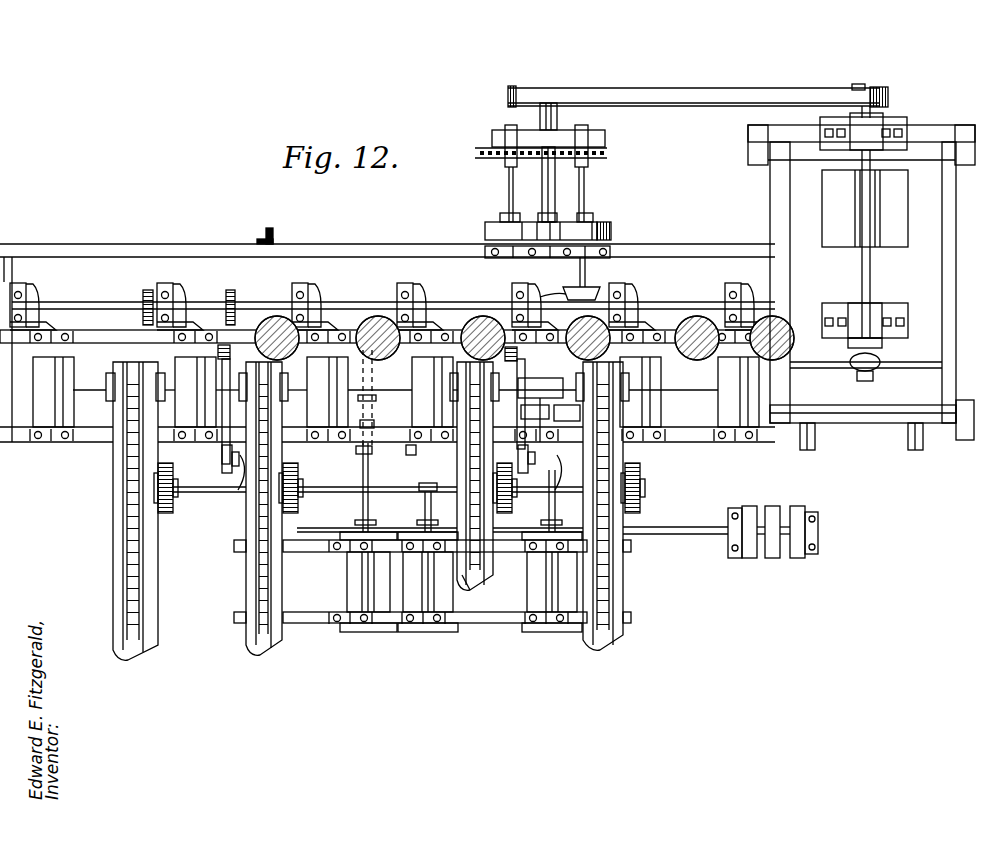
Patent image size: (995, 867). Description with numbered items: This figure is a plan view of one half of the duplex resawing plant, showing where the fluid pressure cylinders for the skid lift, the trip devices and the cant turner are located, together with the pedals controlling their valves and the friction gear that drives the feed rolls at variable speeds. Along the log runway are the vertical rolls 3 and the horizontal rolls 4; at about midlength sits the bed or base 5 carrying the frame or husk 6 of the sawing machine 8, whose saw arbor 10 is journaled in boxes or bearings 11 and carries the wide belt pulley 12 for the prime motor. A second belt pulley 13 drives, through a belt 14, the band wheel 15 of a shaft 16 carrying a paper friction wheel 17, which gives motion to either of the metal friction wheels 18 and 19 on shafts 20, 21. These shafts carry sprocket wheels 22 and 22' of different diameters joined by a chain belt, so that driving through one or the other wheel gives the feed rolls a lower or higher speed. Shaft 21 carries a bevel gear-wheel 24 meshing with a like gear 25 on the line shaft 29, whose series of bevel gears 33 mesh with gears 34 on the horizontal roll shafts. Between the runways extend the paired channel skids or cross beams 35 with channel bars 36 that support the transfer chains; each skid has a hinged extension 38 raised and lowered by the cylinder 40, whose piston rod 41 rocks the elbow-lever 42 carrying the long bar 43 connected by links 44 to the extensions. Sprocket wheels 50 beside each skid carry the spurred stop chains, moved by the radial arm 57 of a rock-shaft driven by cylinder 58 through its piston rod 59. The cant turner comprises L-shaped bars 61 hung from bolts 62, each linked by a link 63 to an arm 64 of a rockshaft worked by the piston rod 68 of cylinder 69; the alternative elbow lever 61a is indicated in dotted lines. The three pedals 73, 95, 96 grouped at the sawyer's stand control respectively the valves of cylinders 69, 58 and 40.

The vertical rolls 3 is at (272, 318).
The horizontal rolls 4 is at (60, 397).
The bed or base 5 is at (875, 212).
The frame or husk 6 is at (957, 270).
The sawing machine 8 is at (851, 362).
The saw arbor 10 is at (858, 264).
The boxes or bearings 11 is at (835, 138).
The wide belt pulley 12 is at (830, 240).
The belt pulley 13 is at (889, 98).
The belt 14 is at (678, 100).
The band wheel 15 is at (508, 104).
The shaft 16 is at (543, 187).
The friction wheel 17 is at (560, 222).
The metal friction wheel 18 is at (487, 228).
The metal friction wheel 19 is at (612, 230).
The shaft 20 is at (505, 172).
The shaft 21 is at (587, 168).
The sprocket wheel 22 is at (531, 140).
The sprocket wheel 22' is at (561, 153).
The bevel gear-wheel 24 is at (600, 292).
The bevel gear 25 is at (562, 298).
The line shaft 29 is at (106, 301).
The bevel gear 33 is at (34, 300).
The bevel gear 34 is at (338, 318).
The skids or cross beams 35 is at (244, 553).
The channel bars 36 is at (478, 575).
The hinged extension 38 is at (144, 416).
The cylinder 40 is at (552, 612).
The piston rod 41 is at (548, 502).
The elbow-lever 42 is at (560, 387).
The long rod or bar 43 is at (373, 390).
The links 44 is at (110, 383).
The sprocket wheels 50 is at (166, 510).
The radial arm 57 is at (428, 483).
The cylinder 58 is at (428, 612).
The piston rod or stem 59 is at (424, 505).
The L-shaped bar 61 is at (236, 364).
The elbow lever 61a is at (405, 450).
The bolt 62 is at (217, 352).
The link 63 is at (222, 466).
The arm 64 is at (238, 478).
The piston rod 68 is at (362, 470).
The cylinder 69 is at (350, 565).
The pedal or actuating lever 73 is at (797, 558).
The pedal 95 is at (772, 555).
The pedal 96 is at (744, 555).